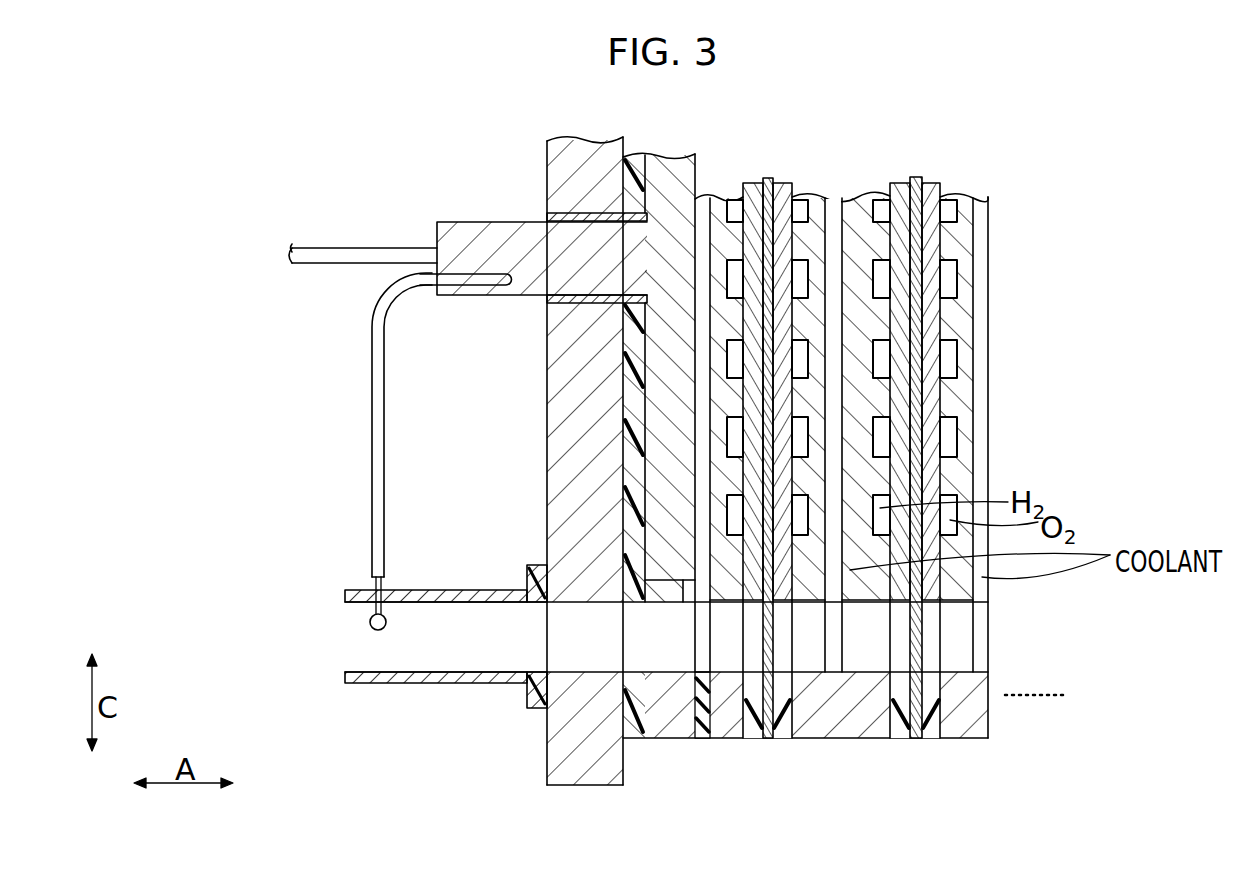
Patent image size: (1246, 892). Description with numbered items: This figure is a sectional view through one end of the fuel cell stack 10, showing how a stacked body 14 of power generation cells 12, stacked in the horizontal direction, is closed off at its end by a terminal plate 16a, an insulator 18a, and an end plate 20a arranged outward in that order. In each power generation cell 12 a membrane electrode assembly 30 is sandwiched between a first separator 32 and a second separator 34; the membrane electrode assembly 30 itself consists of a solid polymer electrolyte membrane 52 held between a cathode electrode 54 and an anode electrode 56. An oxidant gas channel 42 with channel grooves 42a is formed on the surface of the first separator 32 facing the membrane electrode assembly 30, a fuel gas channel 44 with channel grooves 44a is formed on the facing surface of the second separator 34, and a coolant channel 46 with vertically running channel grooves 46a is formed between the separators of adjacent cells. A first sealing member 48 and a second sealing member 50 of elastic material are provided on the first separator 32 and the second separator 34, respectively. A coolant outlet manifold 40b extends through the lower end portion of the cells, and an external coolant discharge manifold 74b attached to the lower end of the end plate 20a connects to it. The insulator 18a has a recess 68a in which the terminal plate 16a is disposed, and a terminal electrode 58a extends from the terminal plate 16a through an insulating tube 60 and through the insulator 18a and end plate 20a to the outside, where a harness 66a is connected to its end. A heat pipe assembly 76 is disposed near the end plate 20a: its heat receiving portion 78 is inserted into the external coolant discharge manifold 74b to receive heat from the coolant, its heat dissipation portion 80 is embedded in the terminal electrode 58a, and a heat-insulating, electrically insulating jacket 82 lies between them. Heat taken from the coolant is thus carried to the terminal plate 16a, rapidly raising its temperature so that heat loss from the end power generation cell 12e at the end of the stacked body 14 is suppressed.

The fuel cell stack 10 is at (597, 97).
The power generation cell 12 is at (962, 503).
The end power generation cell 12e is at (769, 474).
The stacked body 14 is at (857, 494).
The terminal plate 16a is at (645, 527).
The insulator 18a is at (652, 742).
The end plate 20a is at (546, 762).
The membrane electrode assembly 30 is at (770, 454).
The first separator 32 is at (815, 496).
The second separator 34 is at (719, 742).
The coolant outlet manifold 40b is at (962, 637).
The oxidant gas channel 42 is at (1011, 435).
The channel grooves 42a is at (950, 348).
The fuel gas channel 44 is at (952, 399).
The channel grooves 44a is at (887, 428).
The coolant channel 46 is at (843, 252).
The channel grooves 46a is at (850, 318).
The first sealing member 48 is at (927, 707).
The second sealing member 50 is at (897, 703).
The solid polymer electrolyte membrane 52 is at (768, 178).
The cathode electrode 54 is at (787, 183).
The anode electrode 56 is at (753, 183).
The terminal electrode 58a is at (476, 225).
The insulating tube 60 is at (548, 304).
The harness 66a is at (339, 256).
The recess 68a is at (648, 447).
The external coolant discharge manifold 74b is at (393, 686).
The heat pipe assembly 76 is at (366, 462).
The heat receiving portion 78 is at (386, 624).
The heat dissipation portion 80 is at (461, 287).
The jacket 82 is at (372, 500).